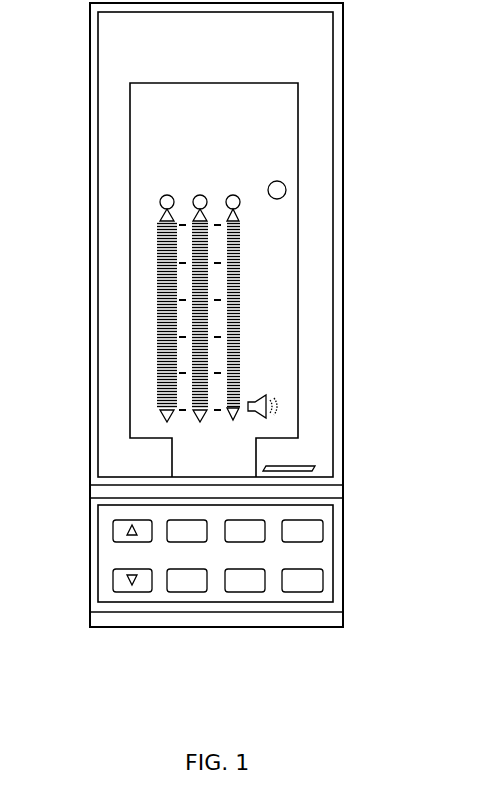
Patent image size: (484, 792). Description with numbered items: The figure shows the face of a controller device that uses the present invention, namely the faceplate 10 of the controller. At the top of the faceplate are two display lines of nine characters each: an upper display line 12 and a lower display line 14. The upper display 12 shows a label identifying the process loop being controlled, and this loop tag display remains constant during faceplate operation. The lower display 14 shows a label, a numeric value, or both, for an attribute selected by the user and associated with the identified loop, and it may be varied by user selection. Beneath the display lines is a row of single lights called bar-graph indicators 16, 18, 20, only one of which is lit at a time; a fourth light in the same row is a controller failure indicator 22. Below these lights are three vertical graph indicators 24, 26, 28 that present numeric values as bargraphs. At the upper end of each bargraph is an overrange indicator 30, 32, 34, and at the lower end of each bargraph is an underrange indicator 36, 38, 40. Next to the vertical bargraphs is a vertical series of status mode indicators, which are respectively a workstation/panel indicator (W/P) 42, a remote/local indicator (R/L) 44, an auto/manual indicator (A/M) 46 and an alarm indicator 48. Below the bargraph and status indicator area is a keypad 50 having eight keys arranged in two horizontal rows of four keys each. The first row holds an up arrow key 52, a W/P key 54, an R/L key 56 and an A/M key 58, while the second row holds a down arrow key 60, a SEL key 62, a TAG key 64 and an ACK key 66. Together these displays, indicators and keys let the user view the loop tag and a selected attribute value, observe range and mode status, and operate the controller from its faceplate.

The faceplate 10 is at (90, 74).
The upper display line 12 is at (147, 128).
The lower display line 14 is at (290, 163).
The bar-graph indicator 16 is at (159, 204).
The bar-graph indicator 18 is at (192, 194).
The bar-graph indicator 20 is at (226, 194).
The controller failure indicator 22 is at (288, 193).
The vertical graph indicator 24 is at (157, 292).
The vertical graph indicator 26 is at (190, 306).
The vertical graph indicator 28 is at (243, 372).
The overrange indicator 30 is at (158, 216).
The overrange indicator 32 is at (191, 219).
The overrange indicator 34 is at (181, 242).
The underrange indicator 36 is at (155, 417).
The underrange indicator 38 is at (195, 426).
The underrange indicator 40 is at (225, 427).
The workstation/panel indicator (W/P) 42 is at (285, 262).
The remote/local indicator (R/L) 44 is at (285, 306).
The auto/manual indicator (A/M) 46 is at (285, 343).
The alarm indicator 48 is at (280, 418).
The keypad 50 is at (98, 540).
The up arrow key 52 is at (118, 543).
The W/P key 54 is at (168, 543).
The R/L key 56 is at (230, 543).
The A/M key 58 is at (323, 534).
The down arrow key 60 is at (130, 592).
The SEL key 62 is at (190, 592).
The TAG key 64 is at (250, 592).
The ACK key 66 is at (323, 588).